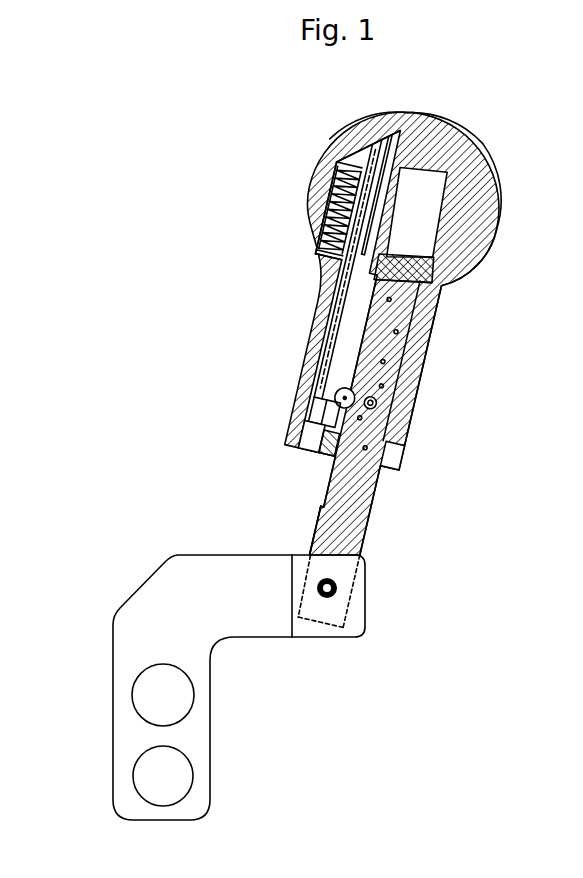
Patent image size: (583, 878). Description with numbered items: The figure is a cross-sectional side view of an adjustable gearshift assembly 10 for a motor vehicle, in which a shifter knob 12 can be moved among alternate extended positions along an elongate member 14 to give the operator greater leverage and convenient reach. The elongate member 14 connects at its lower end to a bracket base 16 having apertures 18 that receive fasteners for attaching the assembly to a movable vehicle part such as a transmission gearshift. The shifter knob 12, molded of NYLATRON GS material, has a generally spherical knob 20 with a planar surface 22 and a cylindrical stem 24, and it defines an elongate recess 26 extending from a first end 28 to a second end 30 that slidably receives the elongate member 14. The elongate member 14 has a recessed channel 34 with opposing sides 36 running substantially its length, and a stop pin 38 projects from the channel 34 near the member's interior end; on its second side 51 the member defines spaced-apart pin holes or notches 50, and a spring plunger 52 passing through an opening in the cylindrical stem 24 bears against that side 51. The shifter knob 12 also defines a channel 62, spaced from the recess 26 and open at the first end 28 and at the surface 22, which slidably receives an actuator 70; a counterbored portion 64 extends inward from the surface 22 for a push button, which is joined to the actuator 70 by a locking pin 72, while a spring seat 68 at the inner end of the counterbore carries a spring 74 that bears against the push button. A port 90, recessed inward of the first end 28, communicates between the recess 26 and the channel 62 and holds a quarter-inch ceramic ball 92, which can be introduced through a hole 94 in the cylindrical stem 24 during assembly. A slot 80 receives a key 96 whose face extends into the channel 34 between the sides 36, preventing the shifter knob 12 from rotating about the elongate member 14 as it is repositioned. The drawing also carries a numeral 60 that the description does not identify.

The adjustable gearshift assembly 10 is at (130, 210).
The shifter knob 12 is at (296, 188).
The elongate member 14 is at (368, 516).
The bracket base 16 is at (240, 630).
The apertures 18 is at (178, 705).
The generally spherical knob 20 is at (473, 160).
The planar surface 22 is at (408, 120).
The cylindrical stem 24 is at (418, 366).
The elongate recess 26 is at (415, 222).
The first end 28 is at (383, 474).
The second end 30 is at (443, 150).
The recessed channel 34 is at (314, 530).
The opposing sides 36 is at (322, 509).
The stop pin 38 is at (445, 283).
The pin holes or notches 50 is at (382, 357).
The second side 51 is at (400, 327).
The spring plunger 52 is at (374, 410).
The end wall 60 is at (360, 137).
The channel 62 is at (325, 306).
The counterbored portion 64 is at (322, 201).
The spring seat 68 is at (317, 252).
The actuator 70 is at (330, 343).
The locking pin 72 is at (377, 157).
The spring 74 is at (337, 213).
The slot 80 is at (310, 430).
The port 90 is at (297, 452).
The ball 92 is at (332, 408).
The hole 94 is at (335, 397).
The key 96 is at (318, 455).